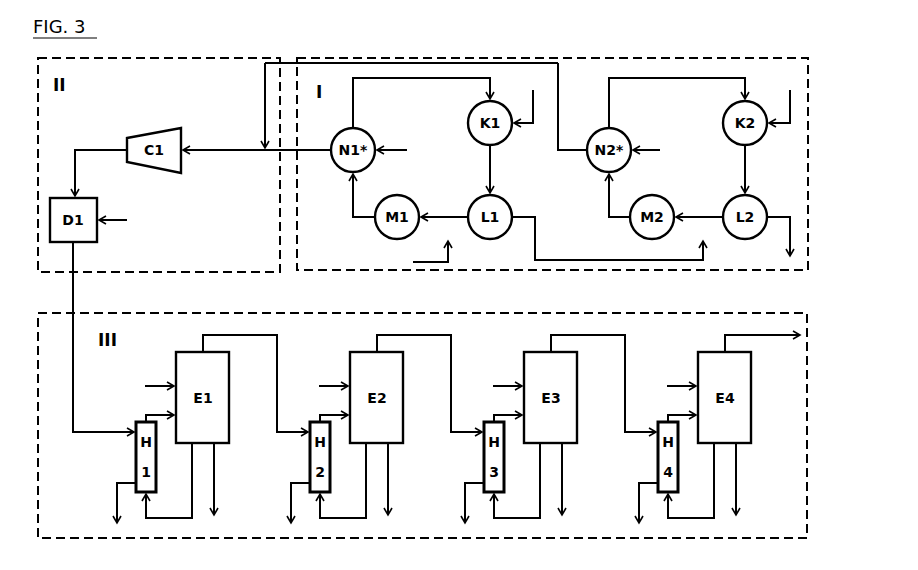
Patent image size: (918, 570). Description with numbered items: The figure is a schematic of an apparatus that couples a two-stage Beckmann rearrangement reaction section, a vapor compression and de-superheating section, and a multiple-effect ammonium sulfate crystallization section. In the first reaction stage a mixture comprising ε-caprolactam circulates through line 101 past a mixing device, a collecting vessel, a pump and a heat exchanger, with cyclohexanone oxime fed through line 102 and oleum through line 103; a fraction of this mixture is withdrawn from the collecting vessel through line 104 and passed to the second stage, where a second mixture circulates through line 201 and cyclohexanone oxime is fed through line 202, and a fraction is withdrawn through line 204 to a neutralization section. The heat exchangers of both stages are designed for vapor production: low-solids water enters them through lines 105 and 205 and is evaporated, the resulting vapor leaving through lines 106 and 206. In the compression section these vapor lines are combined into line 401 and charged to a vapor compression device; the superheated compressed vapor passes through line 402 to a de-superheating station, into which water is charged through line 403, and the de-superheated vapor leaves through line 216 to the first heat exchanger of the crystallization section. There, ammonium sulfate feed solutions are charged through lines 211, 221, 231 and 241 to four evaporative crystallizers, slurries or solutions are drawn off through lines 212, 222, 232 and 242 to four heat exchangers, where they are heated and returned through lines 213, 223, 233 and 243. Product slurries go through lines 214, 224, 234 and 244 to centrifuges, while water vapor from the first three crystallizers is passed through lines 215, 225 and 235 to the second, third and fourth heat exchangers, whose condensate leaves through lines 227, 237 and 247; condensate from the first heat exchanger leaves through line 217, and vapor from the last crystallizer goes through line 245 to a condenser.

The first circulation line 101 is at (421, 147).
The cyclohexanone oxime feed line 102 is at (519, 106).
The oleum feed line 103 is at (430, 251).
The first mixture withdrawal line 104 is at (607, 238).
The first water inlet line 105 is at (396, 143).
The first vapor discharge line 106 is at (411, 105).
The second circulation line 201 is at (677, 147).
The second cyclohexanone oxime feed line 202 is at (776, 106).
The second mixture withdrawal line 204 is at (777, 236).
The second water inlet line 205 is at (652, 143).
The second vapor discharge line 206 is at (573, 106).
The first ammonium sulfate feed line 211 is at (157, 379).
The first slurry recirculation line 212 is at (169, 480).
The first heated slurry return line 213 is at (157, 412).
The first slurry product line 214 is at (227, 479).
The first water vapor line 215 is at (255, 376).
The de-superheated vapor supply line 216 is at (103, 337).
The first condensate discharge line 217 is at (114, 503).
The second ammonium sulfate feed line 221 is at (331, 379).
The second slurry recirculation line 222 is at (343, 480).
The second heated slurry return line 223 is at (331, 412).
The second slurry product line 224 is at (401, 479).
The second water vapor line 225 is at (429, 376).
The second condensate discharge line 227 is at (288, 503).
The third ammonium sulfate feed line 231 is at (505, 379).
The third slurry recirculation line 232 is at (517, 480).
The third heated slurry return line 233 is at (505, 412).
The third slurry product line 234 is at (575, 479).
The third water vapor line 235 is at (603, 376).
The third condensate discharge line 237 is at (462, 503).
The fourth ammonium sulfate feed line 241 is at (679, 379).
The fourth slurry recirculation line 242 is at (691, 480).
The fourth heated slurry return line 243 is at (679, 412).
The fourth slurry product line 244 is at (749, 479).
The fourth water vapor line 245 is at (762, 336).
The fourth condensate discharge line 247 is at (636, 503).
The combined vapor line 401 is at (257, 138).
The compressed vapor line 402 is at (101, 162).
The de-superheating water line 403 is at (117, 211).